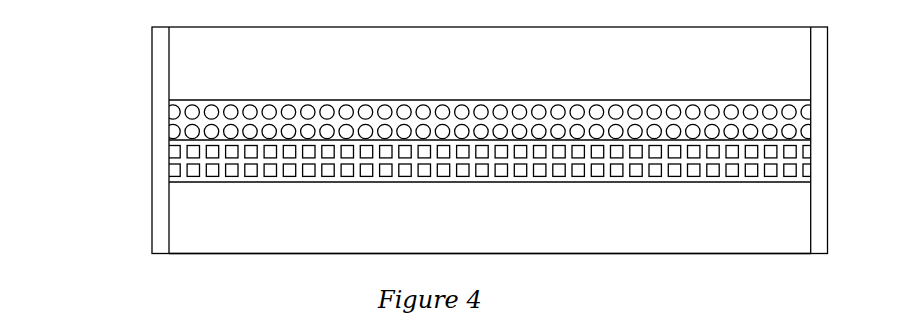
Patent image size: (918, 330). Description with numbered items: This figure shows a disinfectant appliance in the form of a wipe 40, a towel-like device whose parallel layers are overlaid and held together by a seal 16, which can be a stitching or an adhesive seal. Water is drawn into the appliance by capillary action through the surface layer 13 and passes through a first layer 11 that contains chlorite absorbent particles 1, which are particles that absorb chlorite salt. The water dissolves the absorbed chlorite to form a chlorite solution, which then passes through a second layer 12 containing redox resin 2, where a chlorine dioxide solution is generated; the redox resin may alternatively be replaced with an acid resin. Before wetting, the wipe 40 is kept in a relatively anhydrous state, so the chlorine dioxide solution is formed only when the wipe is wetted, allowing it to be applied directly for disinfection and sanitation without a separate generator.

The wipe 40 is at (137, 42).
The seal 16 is at (163, 63).
The second layer 12 is at (167, 104).
The redox resin 2 is at (168, 131).
The first layer 11 is at (167, 159).
The chlorite absorbent particles 1 is at (168, 171).
The surface layer 13 is at (183, 219).